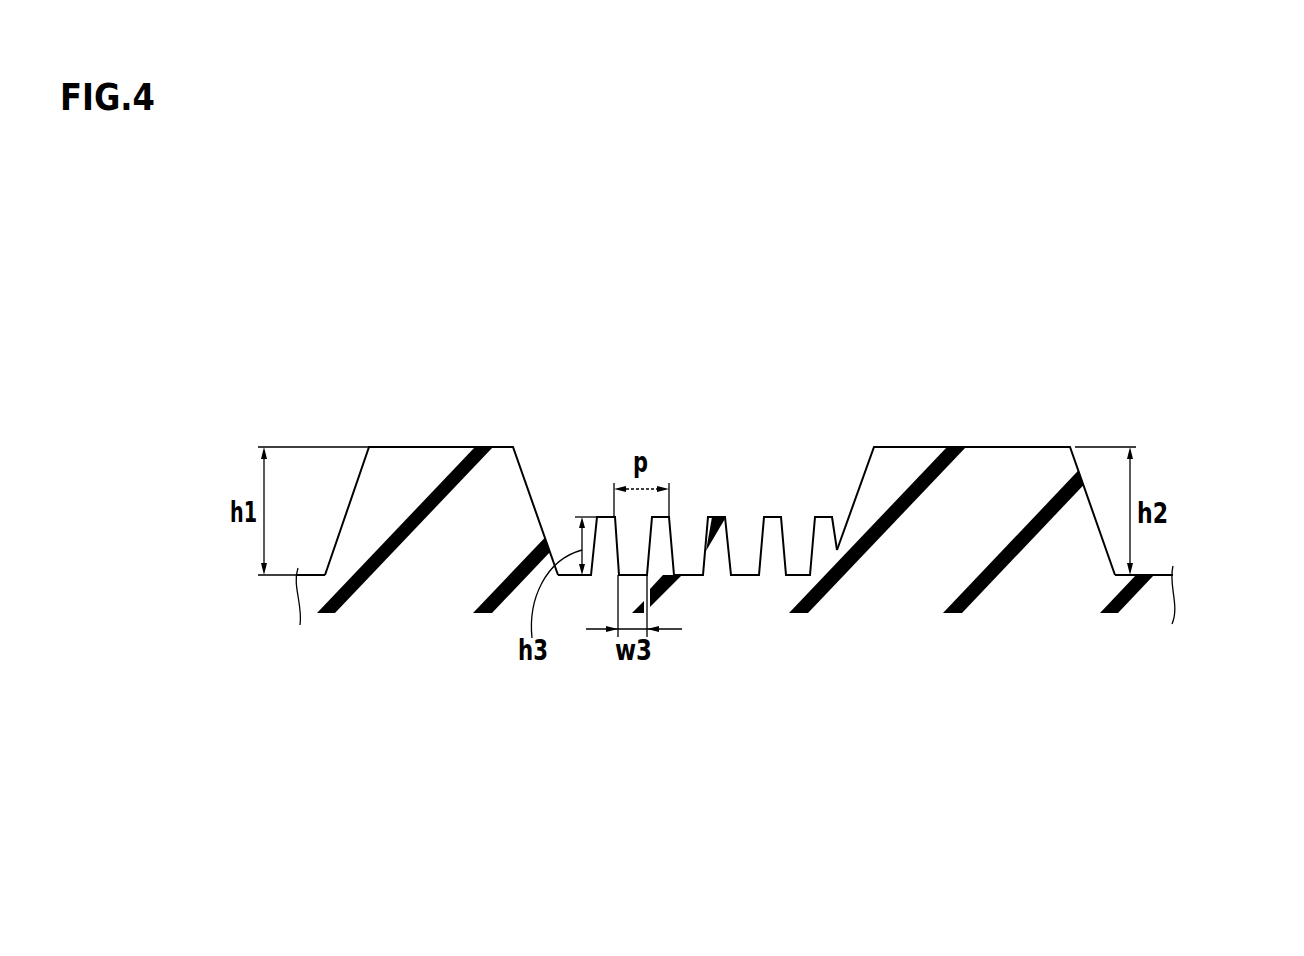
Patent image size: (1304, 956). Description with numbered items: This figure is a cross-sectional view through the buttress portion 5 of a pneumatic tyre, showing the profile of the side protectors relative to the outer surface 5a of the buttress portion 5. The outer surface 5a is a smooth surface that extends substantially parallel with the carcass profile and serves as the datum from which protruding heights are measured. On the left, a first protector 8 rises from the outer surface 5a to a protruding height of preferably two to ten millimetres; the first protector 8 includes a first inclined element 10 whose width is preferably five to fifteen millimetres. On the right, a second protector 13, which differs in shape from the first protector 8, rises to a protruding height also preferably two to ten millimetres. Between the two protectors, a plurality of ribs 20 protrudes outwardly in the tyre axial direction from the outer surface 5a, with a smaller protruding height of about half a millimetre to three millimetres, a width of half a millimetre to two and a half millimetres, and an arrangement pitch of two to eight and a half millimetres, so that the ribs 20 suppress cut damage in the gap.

The buttress portion 5 is at (1150, 390).
The outer surface 5a is at (1155, 575).
The first protector 8 is at (415, 447).
The first inclined element 10 is at (433, 530).
The second protector 13 is at (976, 447).
The rib 20 is at (713, 517).